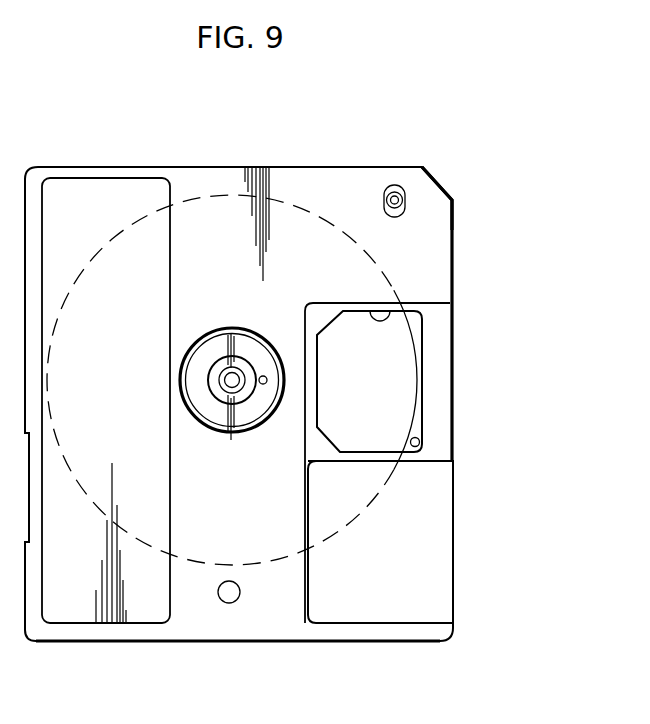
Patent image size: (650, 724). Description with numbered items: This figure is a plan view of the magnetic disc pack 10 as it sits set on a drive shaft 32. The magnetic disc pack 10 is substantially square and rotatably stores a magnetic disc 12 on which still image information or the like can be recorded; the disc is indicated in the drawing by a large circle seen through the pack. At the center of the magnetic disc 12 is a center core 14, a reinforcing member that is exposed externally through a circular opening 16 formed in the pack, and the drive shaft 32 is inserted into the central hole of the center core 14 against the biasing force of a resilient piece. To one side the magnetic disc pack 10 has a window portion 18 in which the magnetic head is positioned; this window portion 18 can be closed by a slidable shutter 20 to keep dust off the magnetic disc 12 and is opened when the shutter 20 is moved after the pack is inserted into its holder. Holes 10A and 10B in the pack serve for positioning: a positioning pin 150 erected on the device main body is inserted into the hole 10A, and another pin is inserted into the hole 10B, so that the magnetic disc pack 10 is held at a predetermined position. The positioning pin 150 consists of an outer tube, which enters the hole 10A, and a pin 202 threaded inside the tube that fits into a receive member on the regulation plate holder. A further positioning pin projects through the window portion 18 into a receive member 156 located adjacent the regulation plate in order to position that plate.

The magnetic disc pack 10 is at (314, 159).
The positioning hole 10A is at (405, 206).
The positioning hole 10B is at (231, 597).
The magnetic disc 12 is at (345, 230).
The center core 14 is at (220, 343).
The circular opening 16 is at (259, 352).
The window portion 18 is at (385, 318).
The shutter 20 is at (437, 578).
The drive shaft 32 is at (231, 400).
The positioning pin 150 is at (396, 186).
The receive member 156 is at (420, 442).
The pin 202 is at (401, 192).